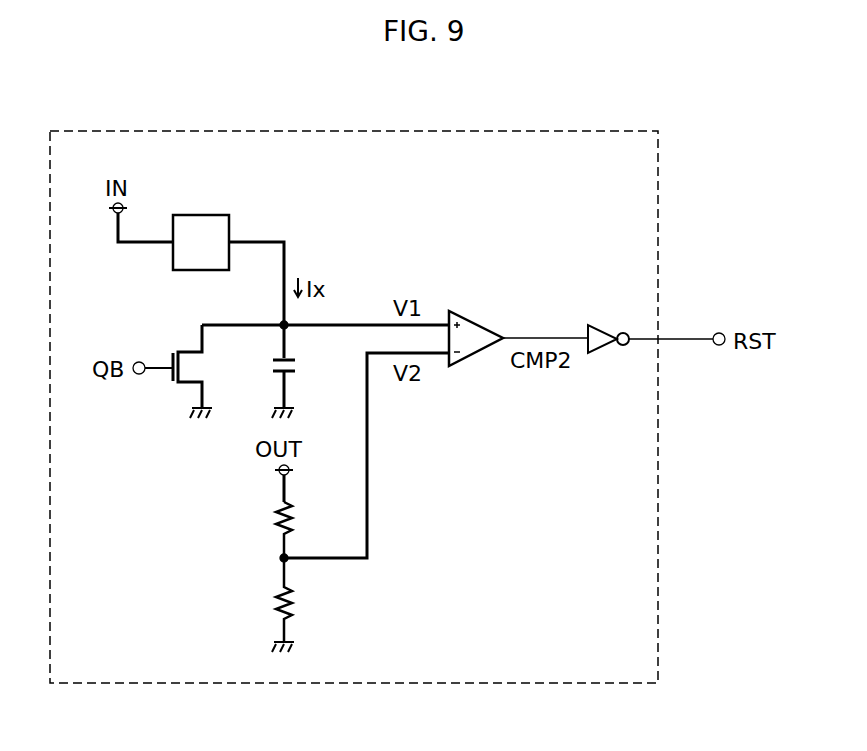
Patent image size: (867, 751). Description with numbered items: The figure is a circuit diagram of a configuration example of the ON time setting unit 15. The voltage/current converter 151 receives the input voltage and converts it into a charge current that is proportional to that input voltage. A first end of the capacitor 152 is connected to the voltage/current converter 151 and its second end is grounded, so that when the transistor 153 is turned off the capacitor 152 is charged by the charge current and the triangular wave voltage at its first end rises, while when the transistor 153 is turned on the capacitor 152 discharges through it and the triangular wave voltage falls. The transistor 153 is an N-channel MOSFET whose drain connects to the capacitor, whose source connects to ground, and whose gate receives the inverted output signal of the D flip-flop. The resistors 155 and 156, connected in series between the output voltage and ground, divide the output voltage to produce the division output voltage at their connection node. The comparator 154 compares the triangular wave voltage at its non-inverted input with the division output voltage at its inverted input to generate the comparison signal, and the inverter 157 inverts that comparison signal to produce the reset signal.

The ON time setting unit 15 is at (353, 131).
The voltage/current converter 151 is at (202, 215).
The capacitor 152 is at (314, 388).
The N-channel type MOS field effect transistor 153 is at (196, 371).
The comparator 154 is at (472, 323).
The resistor 155 is at (251, 530).
The resistor 156 is at (252, 605).
The inverter 157 is at (603, 323).